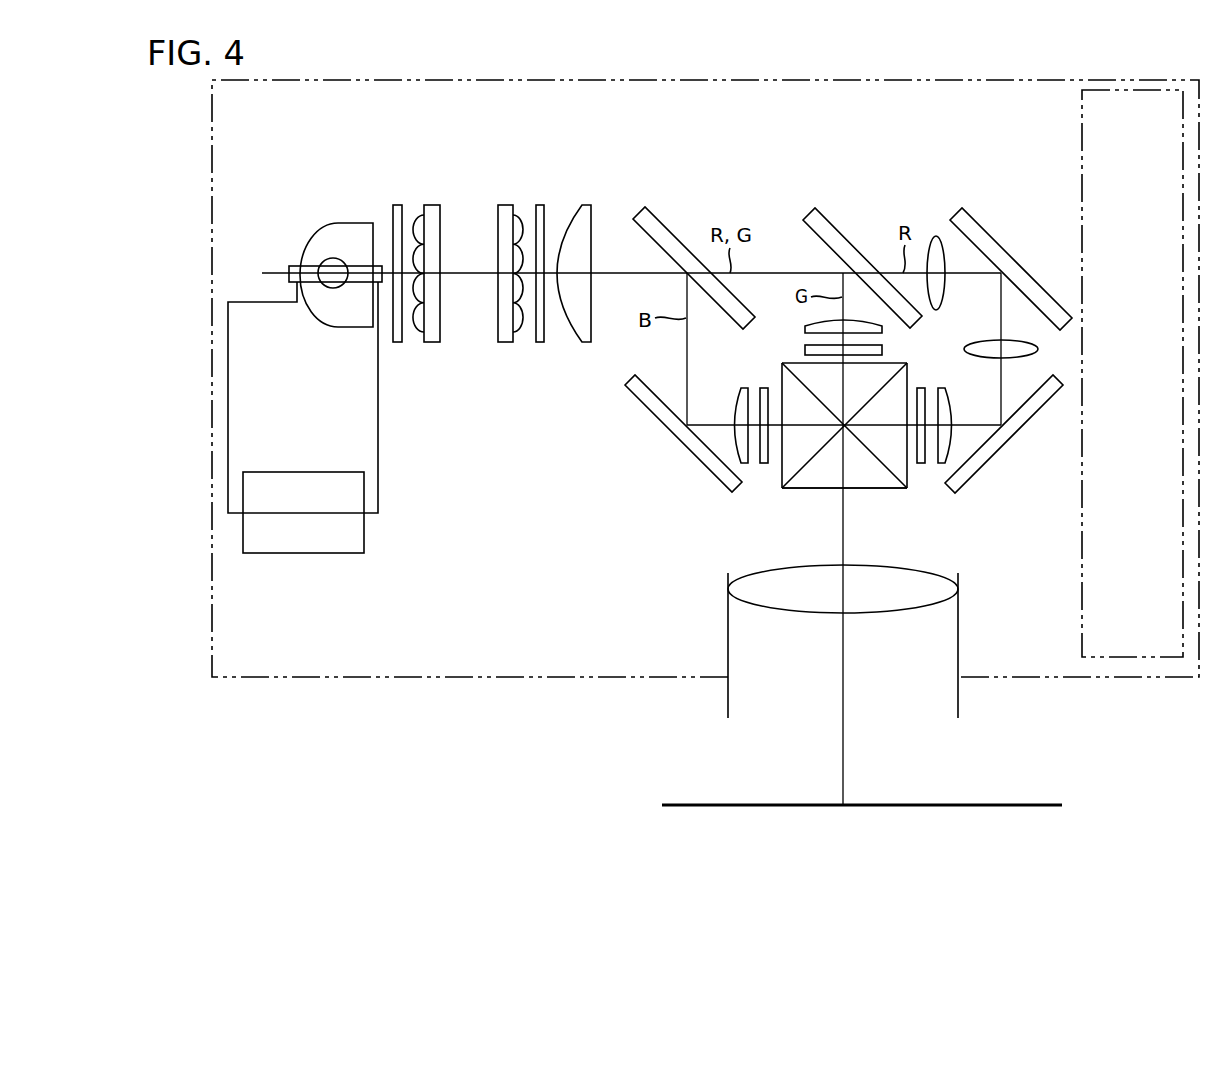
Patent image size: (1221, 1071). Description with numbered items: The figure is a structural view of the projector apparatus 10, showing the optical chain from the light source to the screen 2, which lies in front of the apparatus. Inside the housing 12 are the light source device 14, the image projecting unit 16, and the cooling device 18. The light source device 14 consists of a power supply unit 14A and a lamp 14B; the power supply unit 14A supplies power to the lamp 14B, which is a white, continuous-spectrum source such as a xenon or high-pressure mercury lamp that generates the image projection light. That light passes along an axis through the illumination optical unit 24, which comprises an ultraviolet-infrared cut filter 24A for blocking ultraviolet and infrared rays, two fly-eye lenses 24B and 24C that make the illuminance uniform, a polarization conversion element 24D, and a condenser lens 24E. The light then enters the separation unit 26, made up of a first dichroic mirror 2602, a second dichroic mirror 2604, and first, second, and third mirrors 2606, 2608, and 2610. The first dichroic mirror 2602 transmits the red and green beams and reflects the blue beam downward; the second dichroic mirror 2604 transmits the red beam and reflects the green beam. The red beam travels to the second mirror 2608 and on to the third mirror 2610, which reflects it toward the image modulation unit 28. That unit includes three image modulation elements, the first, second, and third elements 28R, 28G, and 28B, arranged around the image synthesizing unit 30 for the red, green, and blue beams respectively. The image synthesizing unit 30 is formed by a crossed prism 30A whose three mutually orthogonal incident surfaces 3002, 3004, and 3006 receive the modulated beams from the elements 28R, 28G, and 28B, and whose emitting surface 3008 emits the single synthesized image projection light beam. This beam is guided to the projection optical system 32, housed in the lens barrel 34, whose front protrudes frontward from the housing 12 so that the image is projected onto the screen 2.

The screen 2 is at (773, 805).
The projector apparatus 10 is at (367, 71).
The housing 12 is at (994, 79).
The light source device 14 is at (284, 183).
The power supply unit 14A is at (303, 471).
The lamp 14B is at (349, 215).
The image projecting unit 16 is at (708, 177).
The cooling device 18 is at (1082, 122).
The illumination optical unit 24 is at (477, 439).
The ultraviolet-infrared cut filter 24A is at (399, 343).
The fly-eye lens 24B is at (434, 343).
The fly-eye lens 24C is at (503, 343).
The polarization conversion element 24D is at (540, 343).
The condenser lens 24E is at (580, 343).
The separation unit 26 is at (783, 182).
The first dichroic mirror 2602 is at (670, 243).
The second dichroic mirror 2604 is at (848, 253).
The first mirror 2606 is at (662, 420).
The second mirror 2608 is at (1013, 268).
The third mirror 2610 is at (1000, 443).
The image modulation unit 28 is at (934, 483).
The third image modulation element 28B is at (764, 388).
The second image modulation element 28G is at (882, 350).
The first image modulation element 28R is at (922, 388).
The image synthesizing unit 30 is at (878, 507).
The crossed prism 30A is at (826, 500).
The incident surface 3002 is at (908, 473).
The incident surface 3004 is at (797, 363).
The incident surface 3006 is at (780, 475).
The emitting surface 3008 is at (805, 490).
The projection optical system 32 is at (790, 613).
The lens barrel 34 is at (728, 700).